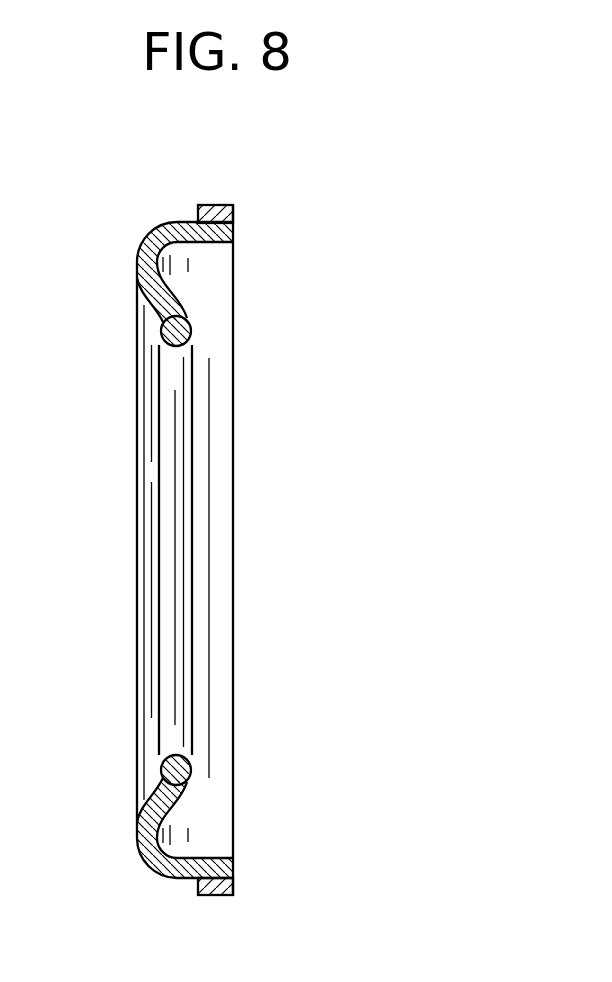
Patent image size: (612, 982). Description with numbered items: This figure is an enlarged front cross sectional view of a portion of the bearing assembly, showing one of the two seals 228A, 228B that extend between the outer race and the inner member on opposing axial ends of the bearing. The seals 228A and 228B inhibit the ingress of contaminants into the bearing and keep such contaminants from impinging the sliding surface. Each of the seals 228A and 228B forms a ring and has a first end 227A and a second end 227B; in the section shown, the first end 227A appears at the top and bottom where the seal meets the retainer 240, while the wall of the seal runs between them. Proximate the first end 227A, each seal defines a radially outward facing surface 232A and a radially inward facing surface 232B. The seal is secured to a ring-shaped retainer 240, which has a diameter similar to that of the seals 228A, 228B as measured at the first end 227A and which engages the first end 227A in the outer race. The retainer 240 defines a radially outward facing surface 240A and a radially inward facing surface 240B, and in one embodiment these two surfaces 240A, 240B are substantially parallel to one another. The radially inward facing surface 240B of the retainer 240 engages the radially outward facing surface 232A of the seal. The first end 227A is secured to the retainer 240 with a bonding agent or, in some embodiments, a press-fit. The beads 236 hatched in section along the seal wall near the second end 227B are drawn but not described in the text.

The seal 228A is at (348, 510).
The seal 228B is at (192, 553).
The first end 227A is at (220, 240).
The second end 227B is at (168, 352).
The bead 236 is at (165, 330).
The retainer 240 is at (227, 205).
The radially outward facing surface 240A is at (208, 207).
The radially inward facing surface 240B is at (222, 229).
The radially outward facing surface 232A is at (215, 895).
The radially inward facing surface 232B is at (209, 860).